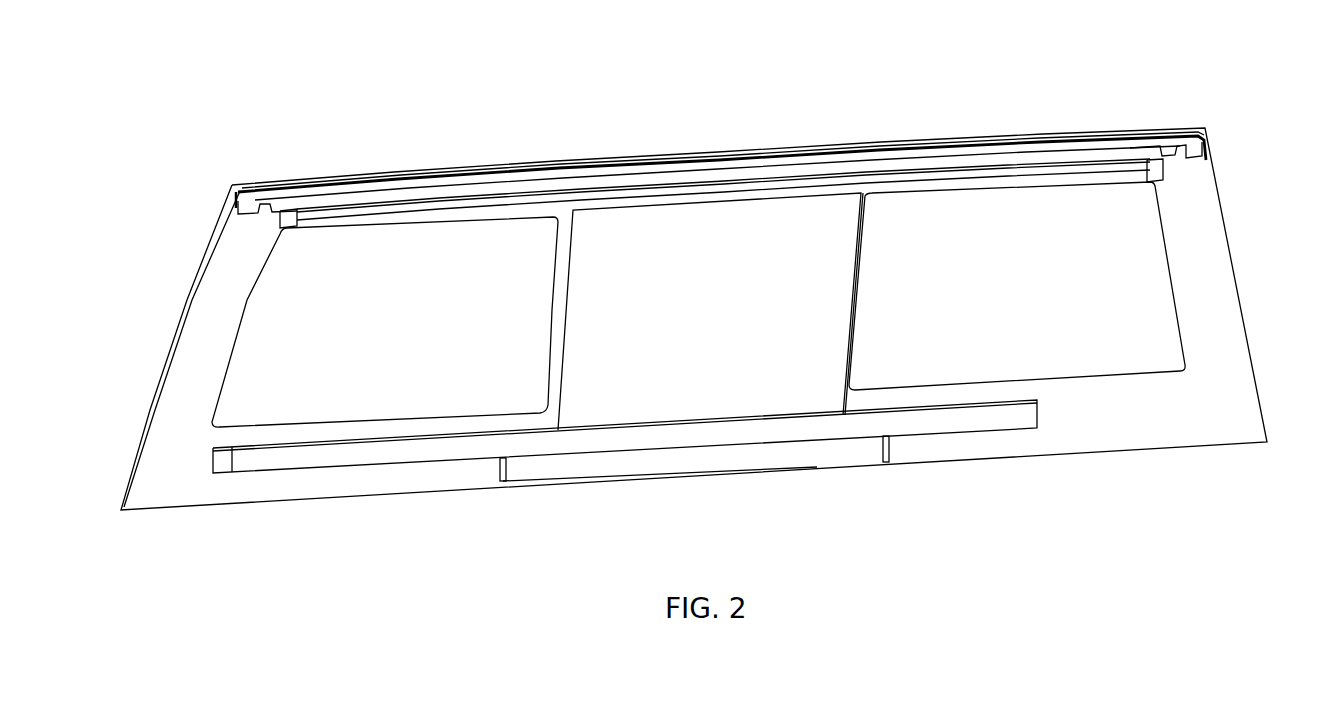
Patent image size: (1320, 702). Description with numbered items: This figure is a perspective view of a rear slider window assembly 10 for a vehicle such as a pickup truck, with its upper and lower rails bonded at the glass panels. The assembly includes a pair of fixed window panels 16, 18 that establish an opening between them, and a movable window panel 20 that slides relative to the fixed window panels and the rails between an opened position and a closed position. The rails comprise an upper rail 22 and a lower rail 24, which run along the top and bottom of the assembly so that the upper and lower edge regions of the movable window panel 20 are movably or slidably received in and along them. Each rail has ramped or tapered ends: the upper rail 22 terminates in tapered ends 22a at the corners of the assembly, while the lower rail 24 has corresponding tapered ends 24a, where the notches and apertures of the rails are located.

The rear slider window assembly 10 is at (703, 95).
The fixed window panel 16 is at (1078, 245).
The fixed window panel 18 is at (393, 265).
The movable window panel 20 is at (762, 233).
The upper rail 22 is at (988, 150).
The ramped or tapered end 22a is at (233, 212).
The lower rail 24 is at (648, 460).
The ramped or tapered end 24a is at (503, 472).